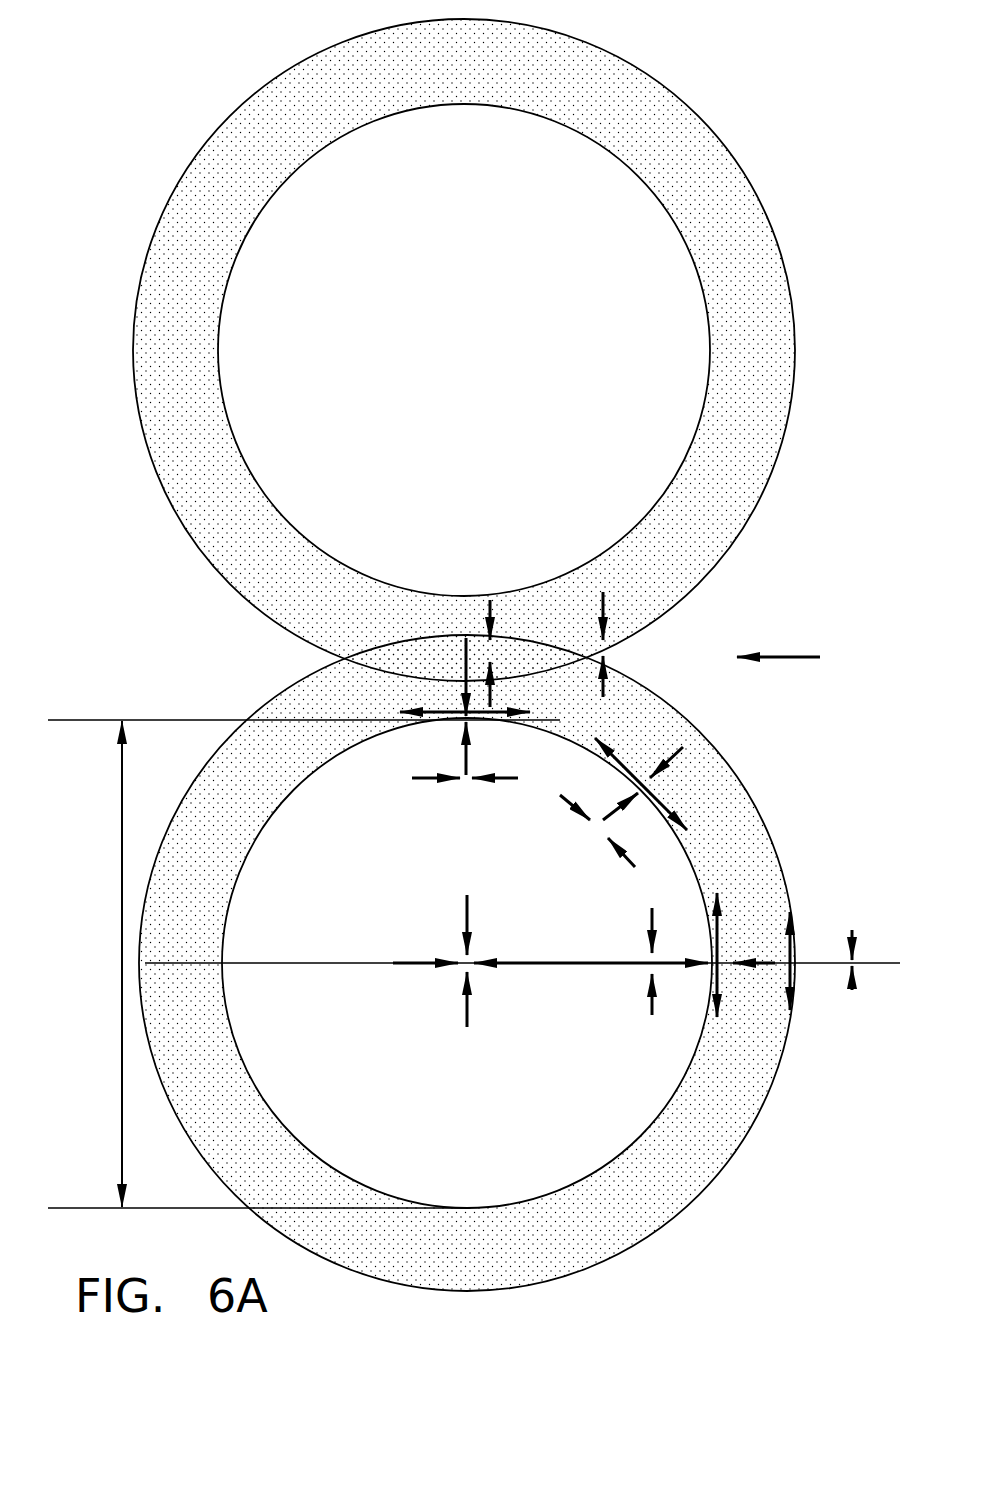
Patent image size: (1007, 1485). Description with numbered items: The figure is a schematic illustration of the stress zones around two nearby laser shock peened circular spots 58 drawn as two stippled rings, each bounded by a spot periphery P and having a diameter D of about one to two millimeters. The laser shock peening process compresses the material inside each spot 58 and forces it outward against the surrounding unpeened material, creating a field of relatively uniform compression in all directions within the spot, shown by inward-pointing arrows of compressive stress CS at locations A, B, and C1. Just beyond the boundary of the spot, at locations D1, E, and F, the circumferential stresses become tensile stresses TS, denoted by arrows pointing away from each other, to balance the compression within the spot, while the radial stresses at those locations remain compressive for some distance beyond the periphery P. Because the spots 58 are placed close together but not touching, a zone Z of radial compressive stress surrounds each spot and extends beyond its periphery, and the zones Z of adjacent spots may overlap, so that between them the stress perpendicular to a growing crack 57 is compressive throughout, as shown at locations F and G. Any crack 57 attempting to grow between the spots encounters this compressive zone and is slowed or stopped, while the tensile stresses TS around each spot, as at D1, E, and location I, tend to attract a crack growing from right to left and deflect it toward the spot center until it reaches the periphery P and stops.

The laser shock peened spot 58 is at (492, 476).
The crack 57 is at (780, 655).
The zone of radial compressive stress Z is at (713, 553).
The spot periphery P is at (691, 242).
The spot diameter D is at (304, 964).
The location D1 is at (732, 976).
The location F is at (453, 707).
The location G is at (590, 640).
The compressive stress CS is at (491, 610).
The tensile stress TS is at (484, 716).
The location E is at (666, 782).
The location C1 is at (590, 841).
The location A is at (450, 946).
The location B is at (637, 950).
The point I is at (843, 945).